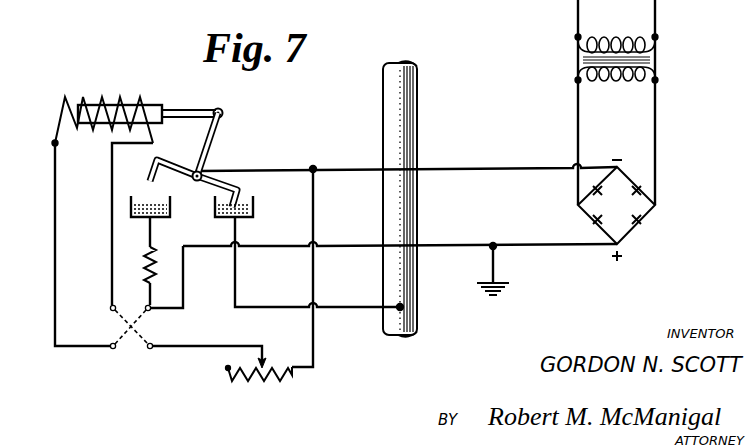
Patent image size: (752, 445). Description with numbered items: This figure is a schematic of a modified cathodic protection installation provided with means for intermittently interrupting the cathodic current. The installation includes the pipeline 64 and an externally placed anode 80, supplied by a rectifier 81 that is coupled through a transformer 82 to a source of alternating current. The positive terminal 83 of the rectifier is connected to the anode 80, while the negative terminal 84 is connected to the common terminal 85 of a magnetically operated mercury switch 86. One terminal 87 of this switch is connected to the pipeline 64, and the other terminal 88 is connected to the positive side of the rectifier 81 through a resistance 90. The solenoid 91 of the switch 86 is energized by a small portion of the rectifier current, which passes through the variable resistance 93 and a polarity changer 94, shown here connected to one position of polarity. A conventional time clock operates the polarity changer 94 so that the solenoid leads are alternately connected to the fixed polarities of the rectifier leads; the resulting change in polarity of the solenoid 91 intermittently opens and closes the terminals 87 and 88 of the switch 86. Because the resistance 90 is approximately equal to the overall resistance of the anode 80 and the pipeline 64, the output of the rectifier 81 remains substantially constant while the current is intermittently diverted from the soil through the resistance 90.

The pipeline 64 is at (400, 108).
The anode 80 is at (498, 280).
The rectifier 81 is at (632, 205).
The transformer 82 is at (612, 35).
The positive terminal 83 is at (623, 247).
The negative terminal 84 is at (636, 146).
The common terminal 85 is at (212, 153).
The magnetically operated mercury switch 86 is at (174, 98).
The terminal 87 is at (244, 197).
The terminal 88 is at (148, 194).
The resistance 90 is at (160, 268).
The solenoid 91 is at (107, 100).
The variable resistance 93 is at (262, 386).
The polarity changer 94 is at (130, 352).